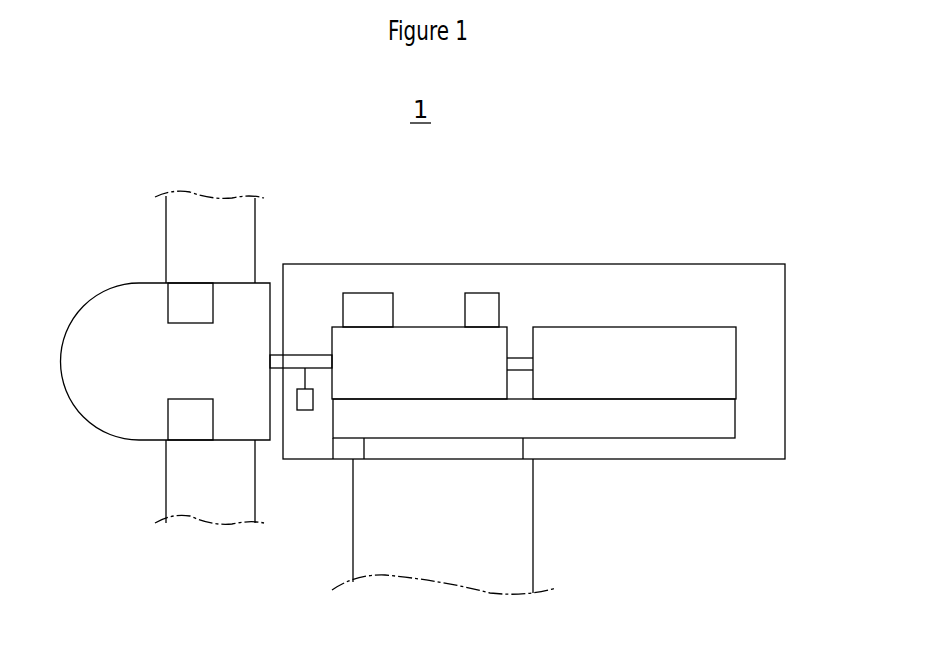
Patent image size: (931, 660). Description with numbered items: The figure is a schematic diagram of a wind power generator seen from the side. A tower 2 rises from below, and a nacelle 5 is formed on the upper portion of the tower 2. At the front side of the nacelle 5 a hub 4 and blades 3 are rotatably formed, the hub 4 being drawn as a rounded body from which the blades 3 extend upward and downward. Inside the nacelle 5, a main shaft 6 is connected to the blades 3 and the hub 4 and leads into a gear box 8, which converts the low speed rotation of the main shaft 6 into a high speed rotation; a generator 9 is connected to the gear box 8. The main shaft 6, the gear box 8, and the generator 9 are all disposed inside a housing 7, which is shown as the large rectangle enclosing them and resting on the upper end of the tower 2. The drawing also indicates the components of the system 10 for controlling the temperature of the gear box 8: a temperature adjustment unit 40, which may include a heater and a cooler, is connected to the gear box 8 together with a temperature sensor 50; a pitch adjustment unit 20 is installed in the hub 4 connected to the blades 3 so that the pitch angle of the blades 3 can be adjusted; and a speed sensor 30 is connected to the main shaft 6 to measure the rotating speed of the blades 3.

The tower 2 is at (533, 536).
The blades 3 is at (166, 229).
The hub 4 is at (113, 293).
The nacelle 5 is at (748, 225).
The main shaft 6 is at (306, 360).
The housing 7 is at (563, 264).
The gear box 8 is at (430, 335).
The generator 9 is at (685, 337).
The system for controlling a temperature of a gear box 10 is at (343, 433).
The pitch adjustment unit 20 is at (172, 298).
The speed sensor 30 is at (305, 411).
The temperature adjustment unit 40 is at (366, 293).
The temperature sensor 50 is at (480, 293).